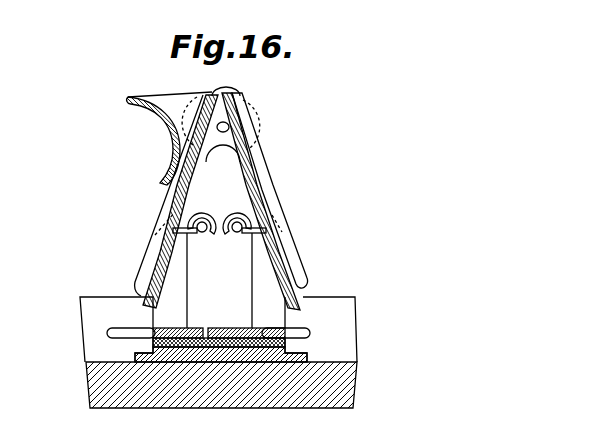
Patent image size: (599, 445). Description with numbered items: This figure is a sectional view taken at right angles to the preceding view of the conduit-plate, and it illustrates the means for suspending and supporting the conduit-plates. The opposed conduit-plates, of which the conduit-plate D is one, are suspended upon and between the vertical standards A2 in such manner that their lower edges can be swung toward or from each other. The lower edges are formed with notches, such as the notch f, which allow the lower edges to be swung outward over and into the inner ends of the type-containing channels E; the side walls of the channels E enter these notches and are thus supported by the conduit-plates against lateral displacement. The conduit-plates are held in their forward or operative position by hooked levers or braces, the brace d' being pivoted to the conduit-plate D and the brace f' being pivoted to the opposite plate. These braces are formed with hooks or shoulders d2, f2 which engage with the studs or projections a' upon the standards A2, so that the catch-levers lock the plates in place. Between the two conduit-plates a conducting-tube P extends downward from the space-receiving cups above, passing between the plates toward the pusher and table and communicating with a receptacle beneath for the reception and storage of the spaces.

The notch f is at (179, 200).
The hooked lever or brace f' is at (194, 217).
The hook or shoulder f2 is at (197, 236).
The hooked lever or brace d' is at (244, 216).
The hook or shoulder d2 is at (250, 237).
The stud or projection a' is at (222, 238).
The vertical standard A2 is at (221, 188).
The conduit-plate D is at (264, 192).
The type-containing channel E is at (218, 329).
The conducting-tube P is at (220, 336).